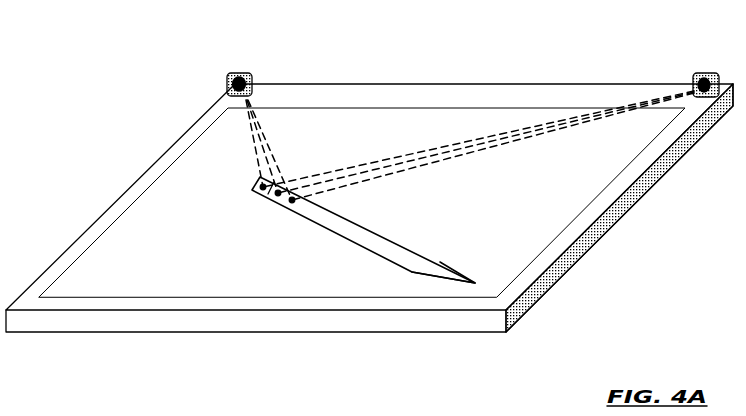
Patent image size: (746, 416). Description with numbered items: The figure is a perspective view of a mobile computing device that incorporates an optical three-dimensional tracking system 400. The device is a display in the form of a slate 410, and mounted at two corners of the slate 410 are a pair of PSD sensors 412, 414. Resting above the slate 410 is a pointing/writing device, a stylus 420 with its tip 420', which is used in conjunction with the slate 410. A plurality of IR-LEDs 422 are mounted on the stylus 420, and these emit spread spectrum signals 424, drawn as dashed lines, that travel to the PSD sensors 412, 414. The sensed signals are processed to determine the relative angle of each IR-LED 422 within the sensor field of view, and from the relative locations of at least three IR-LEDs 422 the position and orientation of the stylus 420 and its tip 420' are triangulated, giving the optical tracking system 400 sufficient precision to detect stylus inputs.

The optical 3D tracking system 400 is at (640, 345).
The slate 410 is at (105, 166).
The PSD sensor 412 is at (237, 74).
The PSD sensor 414 is at (702, 72).
The stylus 420 is at (363, 278).
The stylus tip 420' is at (443, 322).
The IR-LEDs 422 is at (292, 200).
The spread spectrum signals 424 is at (238, 153).